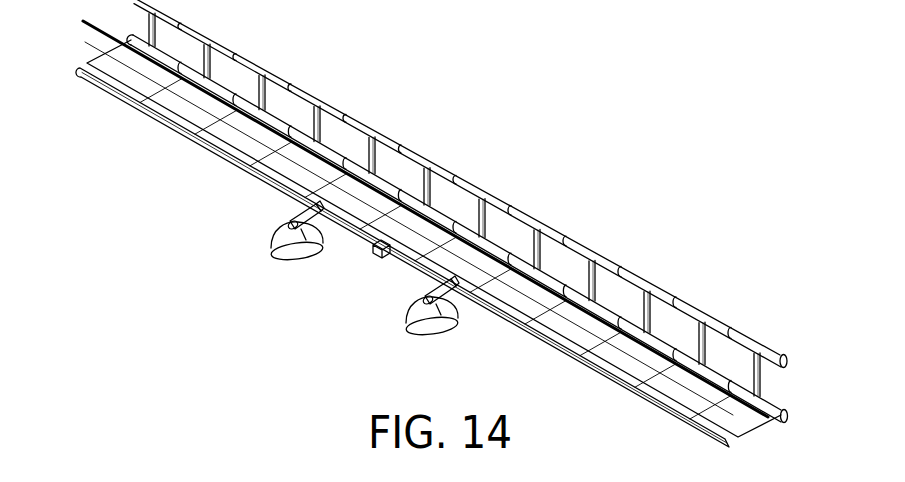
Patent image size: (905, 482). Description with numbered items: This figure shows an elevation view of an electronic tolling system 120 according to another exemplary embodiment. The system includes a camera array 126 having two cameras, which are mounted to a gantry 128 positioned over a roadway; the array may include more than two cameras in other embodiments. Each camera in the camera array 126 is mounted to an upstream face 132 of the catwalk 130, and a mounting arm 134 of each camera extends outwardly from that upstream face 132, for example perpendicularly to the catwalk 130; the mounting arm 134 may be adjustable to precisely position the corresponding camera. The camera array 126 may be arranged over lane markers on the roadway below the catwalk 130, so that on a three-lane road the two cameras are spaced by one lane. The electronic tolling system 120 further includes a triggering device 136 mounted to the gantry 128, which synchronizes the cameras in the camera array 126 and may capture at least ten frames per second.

The electronic tolling system 120 is at (206, 257).
The camera array 126 is at (416, 330).
The gantry 128 is at (428, 155).
The catwalk 130 is at (163, 106).
The upstream face 132 is at (262, 181).
The mounting arm 134 is at (323, 230).
The triggering device 136 is at (376, 262).